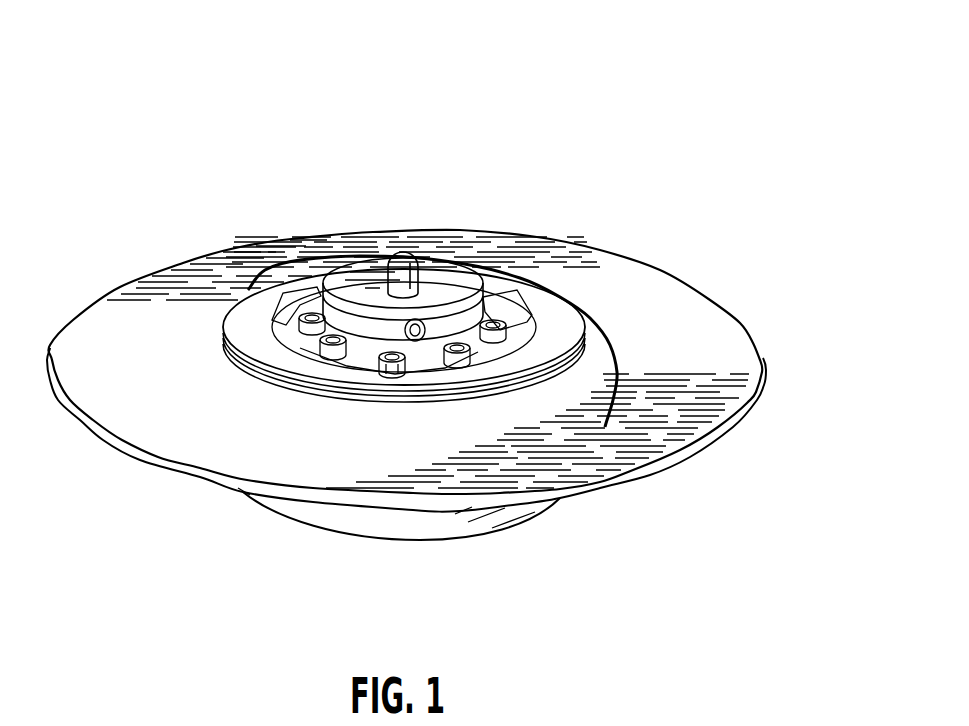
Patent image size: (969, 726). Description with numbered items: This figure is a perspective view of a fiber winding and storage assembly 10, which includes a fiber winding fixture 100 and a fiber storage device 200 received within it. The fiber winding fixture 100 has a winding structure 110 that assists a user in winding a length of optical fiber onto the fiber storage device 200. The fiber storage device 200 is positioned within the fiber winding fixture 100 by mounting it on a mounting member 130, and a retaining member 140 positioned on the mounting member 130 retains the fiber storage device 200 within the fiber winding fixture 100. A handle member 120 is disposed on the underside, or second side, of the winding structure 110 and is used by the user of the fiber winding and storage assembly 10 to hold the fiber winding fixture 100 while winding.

The fiber winding and storage assembly 10 is at (466, 97).
The fiber winding fixture 100 is at (736, 278).
The winding structure 110 is at (767, 364).
The handle member 120 is at (446, 541).
The mounting member 130 is at (406, 252).
The retaining member 140 is at (476, 284).
The fiber storage device 200 is at (243, 292).